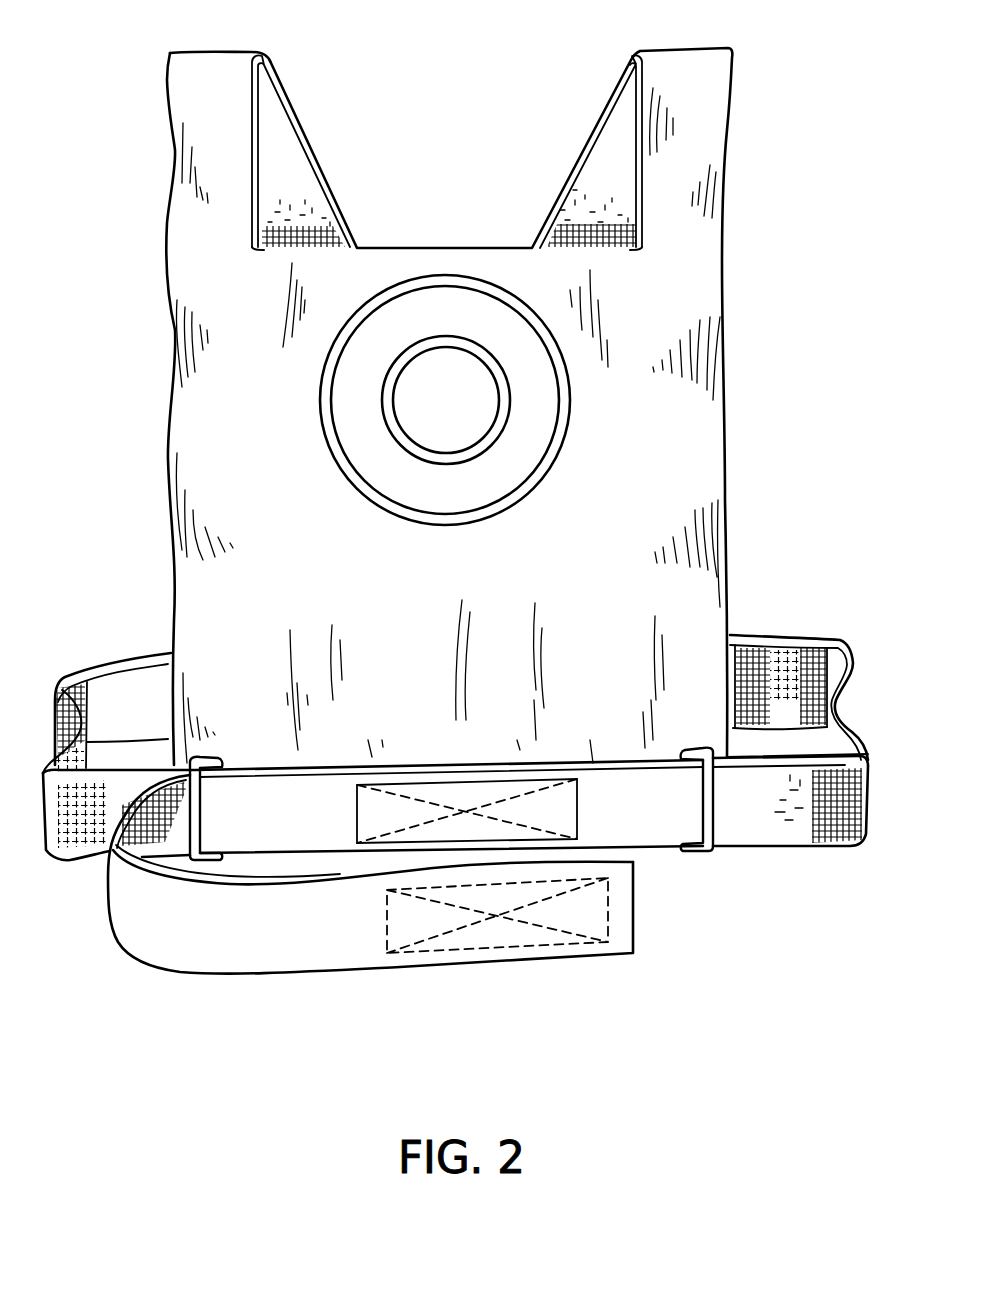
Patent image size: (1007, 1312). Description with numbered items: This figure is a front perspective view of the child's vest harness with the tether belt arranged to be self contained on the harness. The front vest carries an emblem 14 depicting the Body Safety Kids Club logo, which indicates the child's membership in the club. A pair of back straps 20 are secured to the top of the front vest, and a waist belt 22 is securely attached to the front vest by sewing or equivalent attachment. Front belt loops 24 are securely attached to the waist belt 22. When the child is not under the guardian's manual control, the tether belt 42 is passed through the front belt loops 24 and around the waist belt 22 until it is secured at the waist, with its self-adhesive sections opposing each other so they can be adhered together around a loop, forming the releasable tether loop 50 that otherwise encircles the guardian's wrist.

The emblem 14 is at (527, 422).
The back straps 20 is at (707, 128).
The waist belt 22 is at (88, 662).
The front belt loops 24 is at (216, 758).
The tether belt 42 is at (753, 830).
The releasable tether loop 50 is at (578, 818).